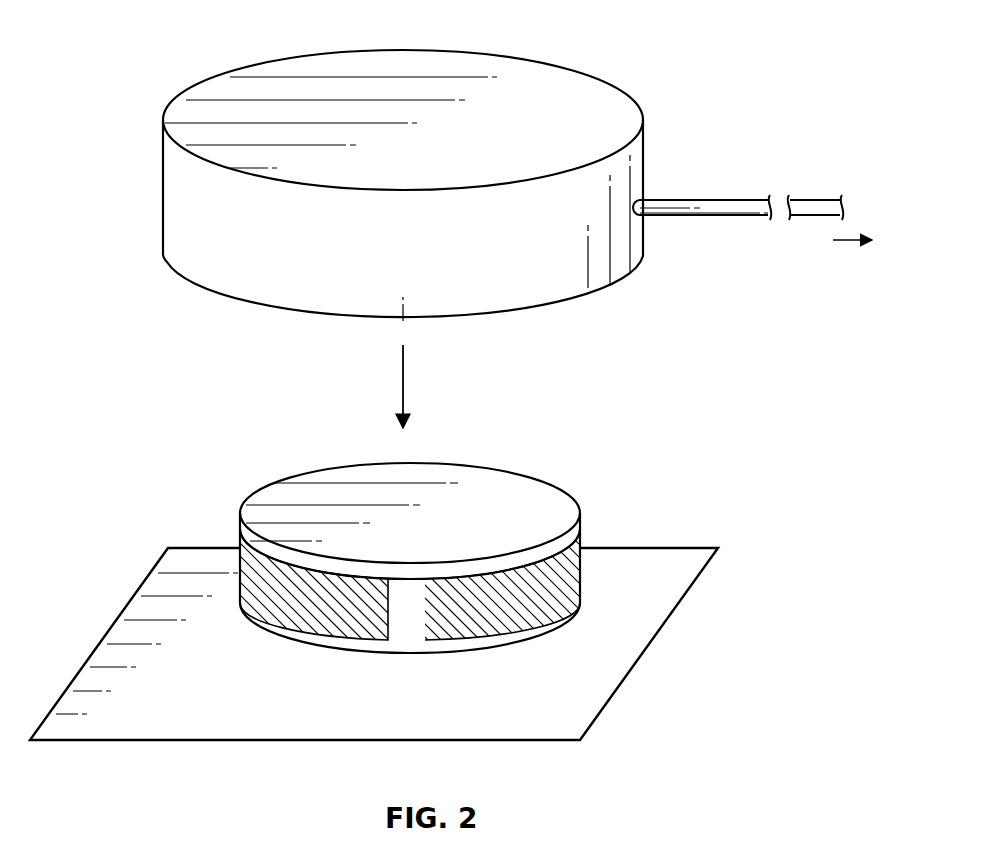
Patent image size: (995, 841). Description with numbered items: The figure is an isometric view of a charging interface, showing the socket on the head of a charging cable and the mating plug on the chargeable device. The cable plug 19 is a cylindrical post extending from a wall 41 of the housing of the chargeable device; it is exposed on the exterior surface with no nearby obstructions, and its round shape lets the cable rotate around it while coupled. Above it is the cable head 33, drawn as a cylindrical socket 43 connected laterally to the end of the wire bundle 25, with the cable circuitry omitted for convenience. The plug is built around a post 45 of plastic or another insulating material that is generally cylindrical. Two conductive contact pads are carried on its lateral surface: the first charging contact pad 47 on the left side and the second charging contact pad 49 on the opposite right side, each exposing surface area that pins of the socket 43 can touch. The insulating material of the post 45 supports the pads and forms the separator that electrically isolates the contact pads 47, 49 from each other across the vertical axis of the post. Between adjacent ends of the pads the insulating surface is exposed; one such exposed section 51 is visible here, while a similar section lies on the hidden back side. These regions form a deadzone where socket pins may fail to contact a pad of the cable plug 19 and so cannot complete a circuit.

The cable plug 19 is at (409, 570).
The wire bundle 25 is at (797, 146).
The cable head 33 is at (190, 38).
The wall 41 is at (660, 592).
The cylindrical socket 43 is at (645, 155).
The post 45 is at (497, 488).
The first charging contact pad 47 is at (240, 532).
The second charging contact pad 49 is at (548, 577).
The exposed section 51 is at (406, 596).